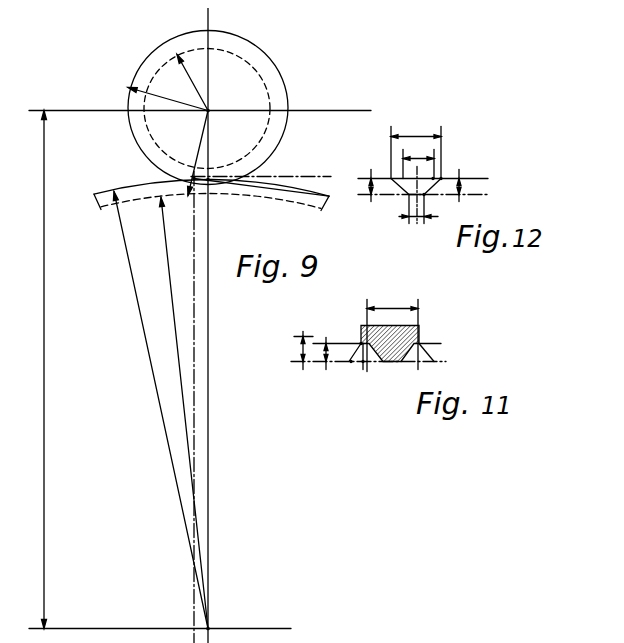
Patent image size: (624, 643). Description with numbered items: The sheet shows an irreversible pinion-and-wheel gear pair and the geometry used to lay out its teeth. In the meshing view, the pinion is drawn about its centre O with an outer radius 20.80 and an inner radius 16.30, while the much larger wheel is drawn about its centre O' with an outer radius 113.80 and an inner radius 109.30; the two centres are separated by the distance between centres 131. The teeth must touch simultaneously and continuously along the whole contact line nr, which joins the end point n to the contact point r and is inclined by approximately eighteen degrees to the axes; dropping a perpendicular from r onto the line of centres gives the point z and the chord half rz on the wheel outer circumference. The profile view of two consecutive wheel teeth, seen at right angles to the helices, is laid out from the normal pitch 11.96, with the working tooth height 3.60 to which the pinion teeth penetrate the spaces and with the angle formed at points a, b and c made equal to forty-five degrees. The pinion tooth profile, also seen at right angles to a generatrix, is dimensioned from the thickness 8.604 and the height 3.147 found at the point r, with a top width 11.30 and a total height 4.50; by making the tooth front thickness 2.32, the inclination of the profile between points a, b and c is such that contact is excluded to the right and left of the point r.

In FIG. 9, the pinion centre O is at (214, 104).
In FIG. 9, the wheel centre O' is at (217, 624).
In FIG. 9, the contact point r is at (188, 174).
In FIG. 9, the foot of perpendicular from r z is at (213, 186).
In FIG. 9, the end of contact line n is at (188, 196).
In FIG. 9, the pinion outer radius 20.80 is at (168, 94).
In FIG. 9, the pinion inner radius 16.30 is at (195, 82).
In FIG. 9, the wheel outer radius 113.80 is at (160, 410).
In FIG. 9, the wheel inner radius 109.30 is at (179, 413).
In FIG. 9, the distance between centres 131 is at (33, 370).
In FIG. 12, the pinion tooth width 11.30 is at (416, 152).
In FIG. 12, the pinion tooth thickness at point r 8.604 is at (419, 162).
In FIG. 12, the pinion tooth height at point r 3.147 is at (374, 186).
In FIG. 12, the pinion tooth total height 4.50 is at (462, 186).
In FIG. 11, the pinion tooth total height 4.50 is at (302, 351).
In FIG. 12, the tooth front thickness 2.32 is at (424, 209).
In FIG. 11, the normal pitch 11.96 is at (392, 334).
In FIG. 11, the working tooth height 3.60 is at (321, 353).
In FIG. 12, the point a is at (429, 174).
In FIG. 11, the point a is at (348, 369).
In FIG. 12, the point b is at (445, 173).
In FIG. 11, the point b is at (357, 338).
In FIG. 12, the point c is at (428, 193).
In FIG. 11, the point c is at (362, 369).